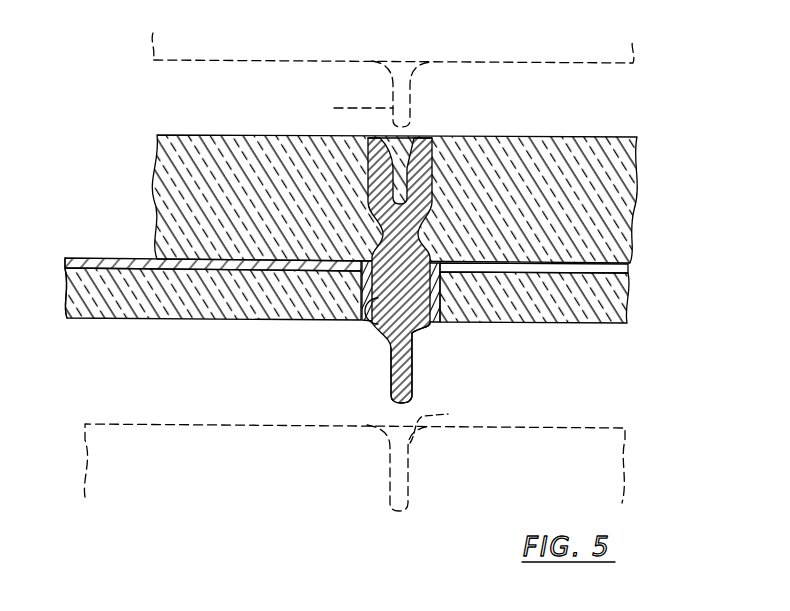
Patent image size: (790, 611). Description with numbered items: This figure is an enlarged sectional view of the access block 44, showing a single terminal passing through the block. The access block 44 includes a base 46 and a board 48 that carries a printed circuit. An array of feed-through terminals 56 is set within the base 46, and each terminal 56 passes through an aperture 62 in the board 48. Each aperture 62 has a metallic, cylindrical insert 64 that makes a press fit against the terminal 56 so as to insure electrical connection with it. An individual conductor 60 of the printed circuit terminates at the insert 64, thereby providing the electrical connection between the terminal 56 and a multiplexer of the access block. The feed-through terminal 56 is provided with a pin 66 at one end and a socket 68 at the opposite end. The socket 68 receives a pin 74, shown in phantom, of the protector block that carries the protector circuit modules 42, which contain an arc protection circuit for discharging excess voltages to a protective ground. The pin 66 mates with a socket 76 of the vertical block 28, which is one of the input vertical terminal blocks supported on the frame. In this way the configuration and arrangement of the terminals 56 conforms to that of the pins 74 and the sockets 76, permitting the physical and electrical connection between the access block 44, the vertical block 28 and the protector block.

The input vertical terminal block 28 is at (568, 428).
The protector circuit module 42 is at (519, 64).
The access block 44 is at (157, 321).
The base 46 is at (158, 159).
The board 48 is at (65, 283).
The feed-through terminal 56 is at (432, 333).
The conductor 60 is at (130, 262).
The aperture 62 is at (373, 326).
The metallic cylindrical insert 64 is at (367, 296).
The pin 66 is at (411, 383).
The socket 68 is at (416, 137).
The pin of protector block 74 is at (334, 108).
The socket of vertical block 76 is at (448, 414).